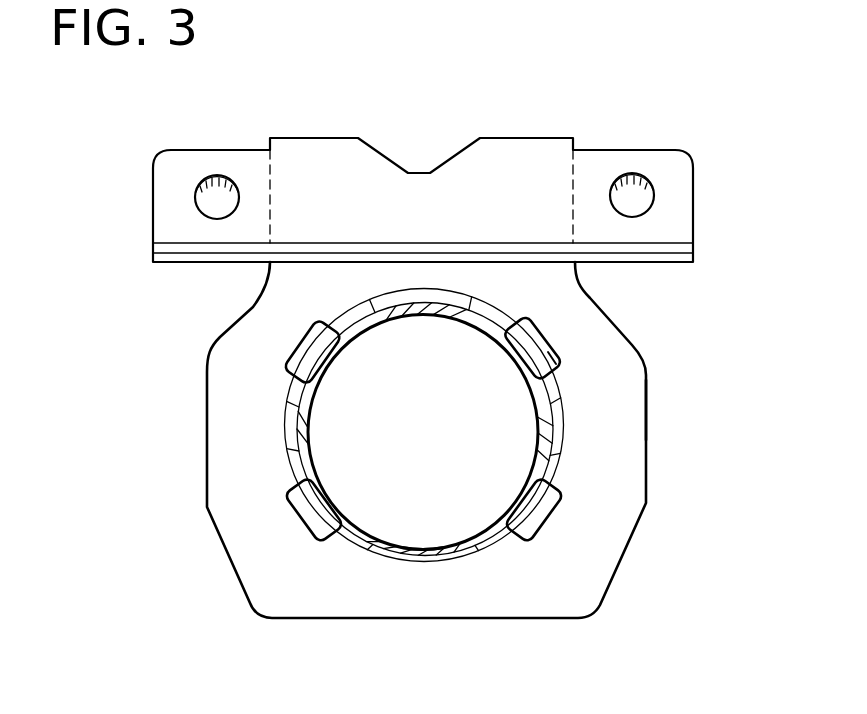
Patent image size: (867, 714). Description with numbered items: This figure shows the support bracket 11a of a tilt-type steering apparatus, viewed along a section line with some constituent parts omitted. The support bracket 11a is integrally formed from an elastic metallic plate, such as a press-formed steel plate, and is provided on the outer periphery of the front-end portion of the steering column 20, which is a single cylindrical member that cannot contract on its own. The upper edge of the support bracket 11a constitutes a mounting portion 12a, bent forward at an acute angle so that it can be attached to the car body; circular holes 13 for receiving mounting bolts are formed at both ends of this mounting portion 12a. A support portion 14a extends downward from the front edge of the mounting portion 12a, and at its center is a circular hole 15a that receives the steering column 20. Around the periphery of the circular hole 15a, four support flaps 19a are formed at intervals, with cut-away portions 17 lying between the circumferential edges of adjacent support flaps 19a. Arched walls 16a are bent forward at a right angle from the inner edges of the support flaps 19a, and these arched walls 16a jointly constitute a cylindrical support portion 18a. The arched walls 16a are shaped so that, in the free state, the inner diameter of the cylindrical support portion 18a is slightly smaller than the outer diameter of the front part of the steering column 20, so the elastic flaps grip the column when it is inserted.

The support bracket 11a is at (648, 404).
The mounting portion 12a is at (330, 183).
The circular holes 13 is at (219, 190).
The support portion 14a is at (598, 565).
The circular hole 15a is at (308, 482).
The arched walls 16a is at (400, 298).
The cut-away portions 17 is at (291, 364).
The cylindrical support portion 18a is at (395, 553).
The support flaps 19a is at (456, 288).
The steering column 20 is at (553, 358).